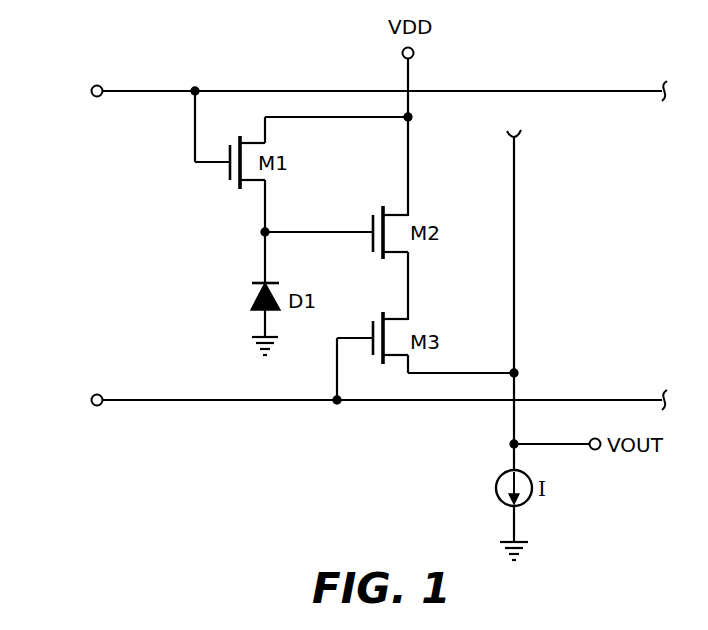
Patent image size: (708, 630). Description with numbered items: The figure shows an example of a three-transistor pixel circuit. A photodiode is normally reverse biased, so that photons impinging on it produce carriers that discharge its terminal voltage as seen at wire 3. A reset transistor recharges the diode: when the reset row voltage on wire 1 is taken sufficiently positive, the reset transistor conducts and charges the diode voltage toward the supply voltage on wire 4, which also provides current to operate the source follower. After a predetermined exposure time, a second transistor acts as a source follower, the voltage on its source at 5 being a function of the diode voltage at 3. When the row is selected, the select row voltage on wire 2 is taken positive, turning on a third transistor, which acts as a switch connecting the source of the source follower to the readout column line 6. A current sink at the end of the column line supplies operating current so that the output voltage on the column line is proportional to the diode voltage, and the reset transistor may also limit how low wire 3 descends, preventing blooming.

The wire carrying row voltage VRES 1 is at (134, 91).
The wire carrying row voltage VSEL 2 is at (134, 400).
The wire at the diode terminal 3 is at (265, 268).
The wire carrying voltage VDD 4 is at (409, 153).
The source of transistor M2 5 is at (409, 268).
The readout column line 6 is at (515, 277).